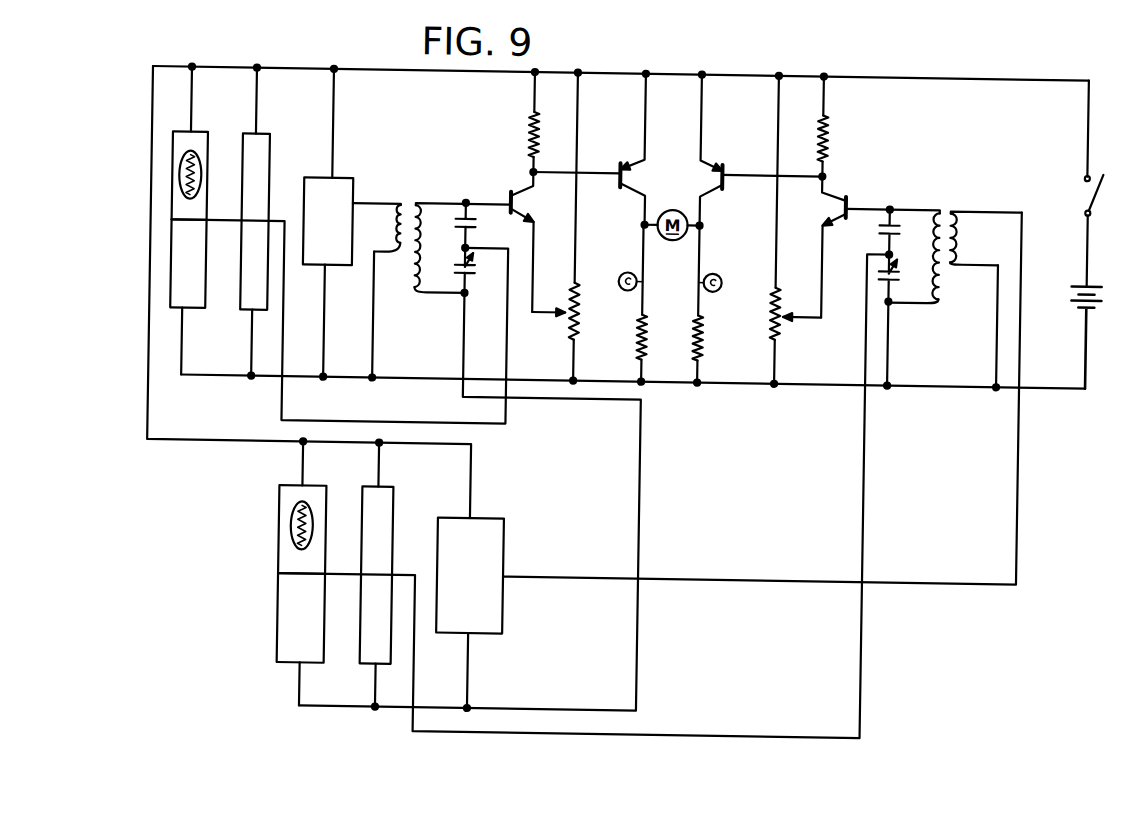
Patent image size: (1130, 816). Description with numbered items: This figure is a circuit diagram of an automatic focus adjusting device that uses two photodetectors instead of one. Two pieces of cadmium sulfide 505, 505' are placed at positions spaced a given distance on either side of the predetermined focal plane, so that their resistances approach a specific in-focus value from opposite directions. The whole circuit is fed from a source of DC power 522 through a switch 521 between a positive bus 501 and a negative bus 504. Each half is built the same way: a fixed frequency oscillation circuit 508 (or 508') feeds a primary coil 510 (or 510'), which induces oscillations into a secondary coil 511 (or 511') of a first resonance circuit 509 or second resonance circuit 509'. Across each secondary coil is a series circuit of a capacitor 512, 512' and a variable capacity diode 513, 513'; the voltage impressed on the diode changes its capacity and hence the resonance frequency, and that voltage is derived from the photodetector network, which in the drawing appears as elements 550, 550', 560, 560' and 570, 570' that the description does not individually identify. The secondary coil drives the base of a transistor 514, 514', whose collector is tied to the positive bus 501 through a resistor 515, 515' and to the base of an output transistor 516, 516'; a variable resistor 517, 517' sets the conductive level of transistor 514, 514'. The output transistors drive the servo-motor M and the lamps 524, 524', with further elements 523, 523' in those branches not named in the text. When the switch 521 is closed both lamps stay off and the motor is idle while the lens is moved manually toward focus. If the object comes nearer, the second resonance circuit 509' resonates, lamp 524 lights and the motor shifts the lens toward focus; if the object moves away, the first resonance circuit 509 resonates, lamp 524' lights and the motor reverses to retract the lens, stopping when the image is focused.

The positive bus 501 is at (626, 66).
The negative bus 504 is at (708, 376).
The cadmium sulfide 505 is at (147, 174).
The cadmium sulfide 505' is at (263, 526).
The fixed frequency oscillation circuit 508 is at (346, 200).
The fixed frequency oscillation circuit 508' is at (490, 556).
The first resonance circuit 509 is at (419, 246).
The second resonance circuit 509' is at (956, 244).
The primary coil 510 is at (364, 256).
The primary coil 510' is at (987, 239).
The secondary coil 511 is at (444, 264).
The secondary coil 511' is at (945, 265).
The capacitor 512 is at (491, 226).
The capacitor 512' is at (865, 232).
The variable capacity diode 513 is at (485, 291).
The variable capacity diode 513' is at (914, 295).
The transistor 514 is at (499, 234).
The transistor 514' is at (855, 239).
The resistor 515 is at (508, 121).
The resistor 515' is at (859, 126).
The transistor 516 is at (617, 149).
The transistor 516' is at (733, 151).
The variable resistor 517 is at (551, 313).
The variable resistor 517' is at (807, 317).
The switch 521 is at (1087, 198).
The source of DC power 522 is at (1089, 296).
The resistor 523 is at (617, 337).
The resistor 523' is at (731, 339).
The lamp 524 is at (613, 262).
The lamp 524' is at (735, 263).
The photocell housing 550 is at (210, 200).
The photocell housing 550' is at (269, 559).
The photocell 560 is at (207, 287).
The photocell 560' is at (270, 607).
The resistor 570 is at (277, 201).
The resistor 570' is at (409, 559).